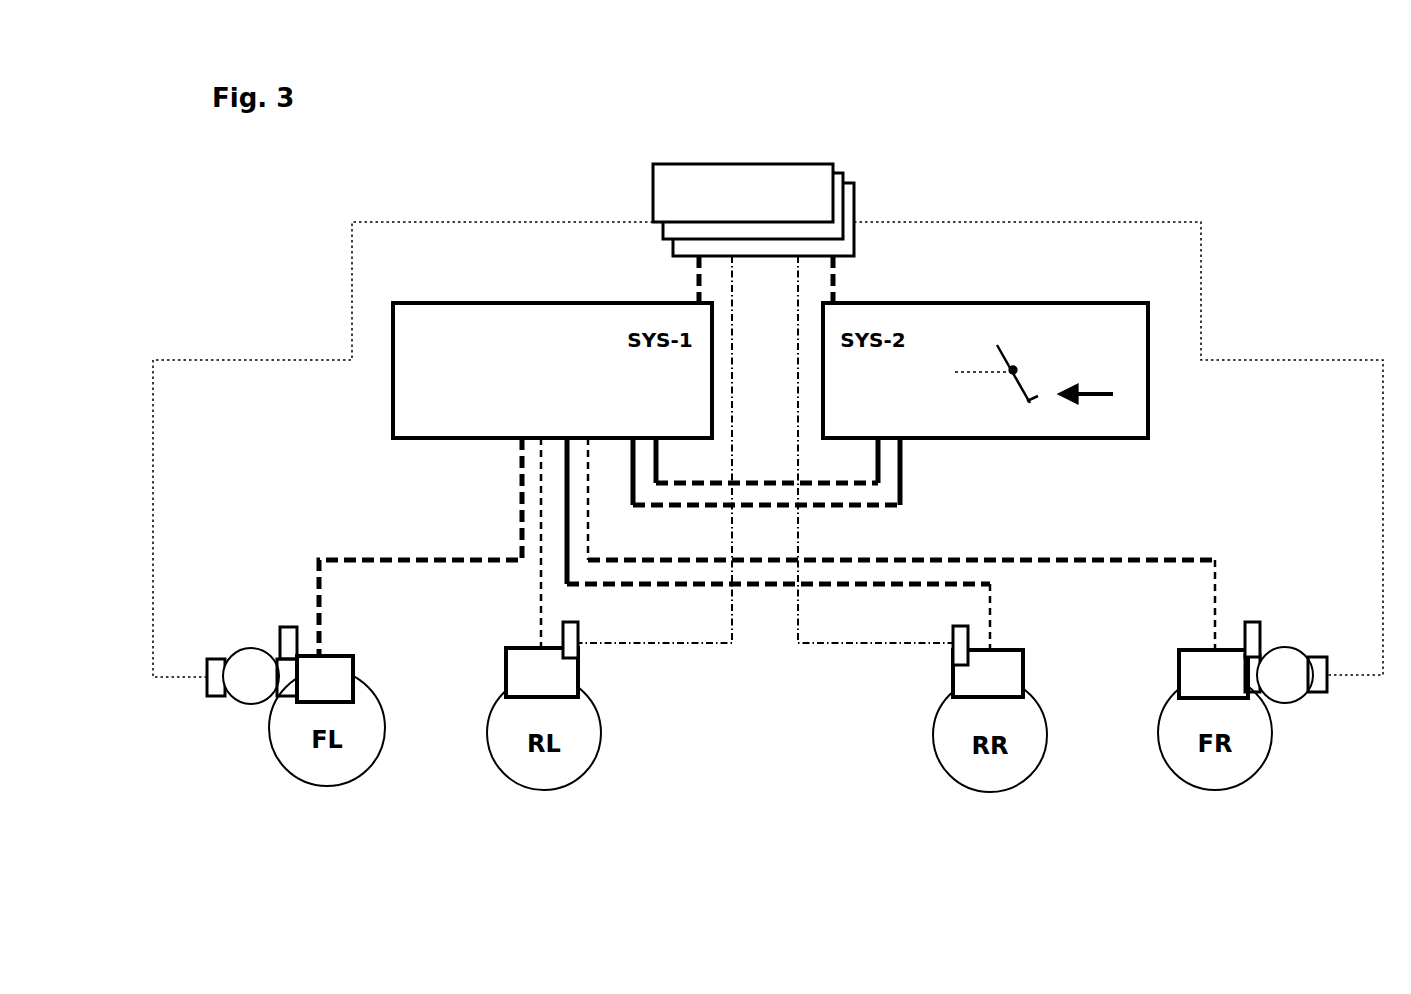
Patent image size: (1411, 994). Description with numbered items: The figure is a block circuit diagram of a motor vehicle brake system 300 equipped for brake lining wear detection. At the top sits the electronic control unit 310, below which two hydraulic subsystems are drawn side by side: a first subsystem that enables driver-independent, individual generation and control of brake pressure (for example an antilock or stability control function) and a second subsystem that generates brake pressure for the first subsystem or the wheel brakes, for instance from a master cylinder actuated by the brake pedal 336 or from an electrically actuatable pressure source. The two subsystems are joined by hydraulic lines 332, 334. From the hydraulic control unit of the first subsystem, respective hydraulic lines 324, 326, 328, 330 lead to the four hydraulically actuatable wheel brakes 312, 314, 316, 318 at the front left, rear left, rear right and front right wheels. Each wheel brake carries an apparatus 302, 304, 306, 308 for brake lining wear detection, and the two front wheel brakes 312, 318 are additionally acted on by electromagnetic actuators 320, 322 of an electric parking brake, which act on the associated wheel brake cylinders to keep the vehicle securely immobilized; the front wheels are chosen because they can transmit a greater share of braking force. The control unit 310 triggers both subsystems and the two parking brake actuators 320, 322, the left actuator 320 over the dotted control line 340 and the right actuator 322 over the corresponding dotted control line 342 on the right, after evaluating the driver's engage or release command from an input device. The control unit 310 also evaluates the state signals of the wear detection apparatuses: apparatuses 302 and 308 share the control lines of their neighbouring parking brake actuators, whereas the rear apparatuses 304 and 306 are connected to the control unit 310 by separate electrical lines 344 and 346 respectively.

The motor vehicle brake system 300 is at (780, 710).
The apparatus for brake lining wear detection 302 is at (282, 630).
The apparatus for brake lining wear detection 304 is at (578, 628).
The apparatus for brake lining wear detection 306 is at (955, 630).
The apparatus for brake lining wear detection 308 is at (1260, 628).
The electronic control unit 310 is at (753, 210).
The wheel brake 312 is at (358, 662).
The wheel brake 314 is at (505, 650).
The wheel brake 316 is at (1025, 650).
The wheel brake 318 is at (1178, 675).
The actuator of the electric parking brake 320 is at (209, 697).
The actuator of the electric parking brake 322 is at (1320, 697).
The hydraulic line 324 is at (348, 570).
The hydraulic line 326 is at (538, 615).
The hydraulic line 328 is at (990, 618).
The hydraulic line 330 is at (1190, 567).
The hydraulic line 332 is at (750, 483).
The hydraulic line 334 is at (905, 485).
The brake pedal 336 is at (1022, 380).
The control line 340 is at (210, 360).
The electrical connection to front right motor 342 is at (1323, 360).
The electrical line 344 is at (695, 645).
The electrical line 346 is at (898, 645).